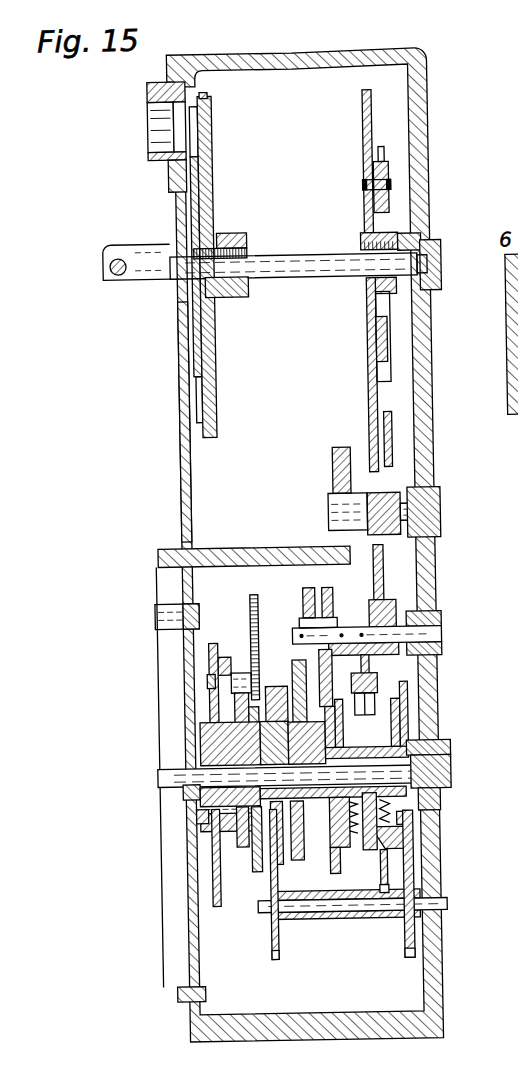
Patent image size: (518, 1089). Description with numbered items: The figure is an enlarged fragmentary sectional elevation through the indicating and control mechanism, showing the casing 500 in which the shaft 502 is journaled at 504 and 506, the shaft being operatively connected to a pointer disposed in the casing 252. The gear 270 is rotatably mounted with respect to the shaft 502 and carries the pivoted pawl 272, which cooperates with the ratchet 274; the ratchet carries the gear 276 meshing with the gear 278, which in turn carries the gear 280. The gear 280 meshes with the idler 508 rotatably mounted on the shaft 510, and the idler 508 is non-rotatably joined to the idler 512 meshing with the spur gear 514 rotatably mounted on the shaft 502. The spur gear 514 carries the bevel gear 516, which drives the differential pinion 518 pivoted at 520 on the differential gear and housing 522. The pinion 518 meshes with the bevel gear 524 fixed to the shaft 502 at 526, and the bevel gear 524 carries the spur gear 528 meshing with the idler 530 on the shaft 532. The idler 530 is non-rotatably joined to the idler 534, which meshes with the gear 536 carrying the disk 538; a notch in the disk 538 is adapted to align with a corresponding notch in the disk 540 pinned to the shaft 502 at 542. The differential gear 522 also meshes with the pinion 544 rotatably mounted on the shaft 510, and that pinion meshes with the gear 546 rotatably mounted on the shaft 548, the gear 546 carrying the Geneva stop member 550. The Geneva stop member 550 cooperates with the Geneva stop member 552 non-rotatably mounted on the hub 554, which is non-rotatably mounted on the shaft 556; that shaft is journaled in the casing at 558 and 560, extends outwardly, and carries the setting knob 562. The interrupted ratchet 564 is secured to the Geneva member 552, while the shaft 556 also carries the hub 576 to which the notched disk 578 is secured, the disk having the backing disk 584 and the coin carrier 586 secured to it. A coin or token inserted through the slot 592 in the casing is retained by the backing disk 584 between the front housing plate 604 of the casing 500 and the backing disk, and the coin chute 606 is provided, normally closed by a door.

The casing 252 is at (154, 992).
The gear 270 is at (214, 641).
The pivoted pawl 272 is at (208, 657).
The ratchet 274 is at (235, 835).
The gear 276 is at (194, 863).
The gear 278 is at (182, 601).
The gear 280 is at (205, 682).
The casing 500 is at (390, 840).
The shaft 502 is at (442, 750).
The journal 504 is at (448, 783).
The journal 506 is at (179, 792).
The idler 508 is at (300, 602).
The shaft 510 is at (424, 636).
The idler 512 is at (310, 600).
The spur gear 514 is at (440, 644).
The bevel gear 516 is at (347, 845).
The differential pinion 518 is at (385, 694).
The pivot 520 is at (368, 678).
The differential gear and housing 522 is at (398, 956).
The bevel gear 524 is at (400, 709).
The fixing point 526 is at (432, 739).
The spur gear 528 is at (405, 826).
The idler 530 is at (415, 858).
The shaft 532 is at (434, 904).
The idler 534 is at (271, 963).
The gear 536 is at (238, 841).
The disk 538 is at (251, 868).
The disk 540 is at (308, 855).
The pin 542 is at (207, 738).
The pinion 544 is at (396, 612).
The gear 546 is at (435, 542).
The shaft 548 is at (426, 514).
The Geneva stop member 550 is at (333, 537).
The Geneva stop member 552 is at (373, 387).
The hub 554 is at (396, 235).
The shaft 556 is at (406, 252).
The journal 558 is at (433, 264).
The journal 560 is at (183, 286).
The setting knob 562 is at (108, 262).
The interrupted ratchet 564 is at (392, 162).
The hub 576 is at (234, 236).
The notched disk 578 is at (221, 166).
The backing disk 584 is at (217, 97).
The coin carrier 586 is at (200, 191).
The slot 592 is at (155, 113).
The front housing plate 604 is at (181, 382).
The coin chute 606 is at (223, 546).